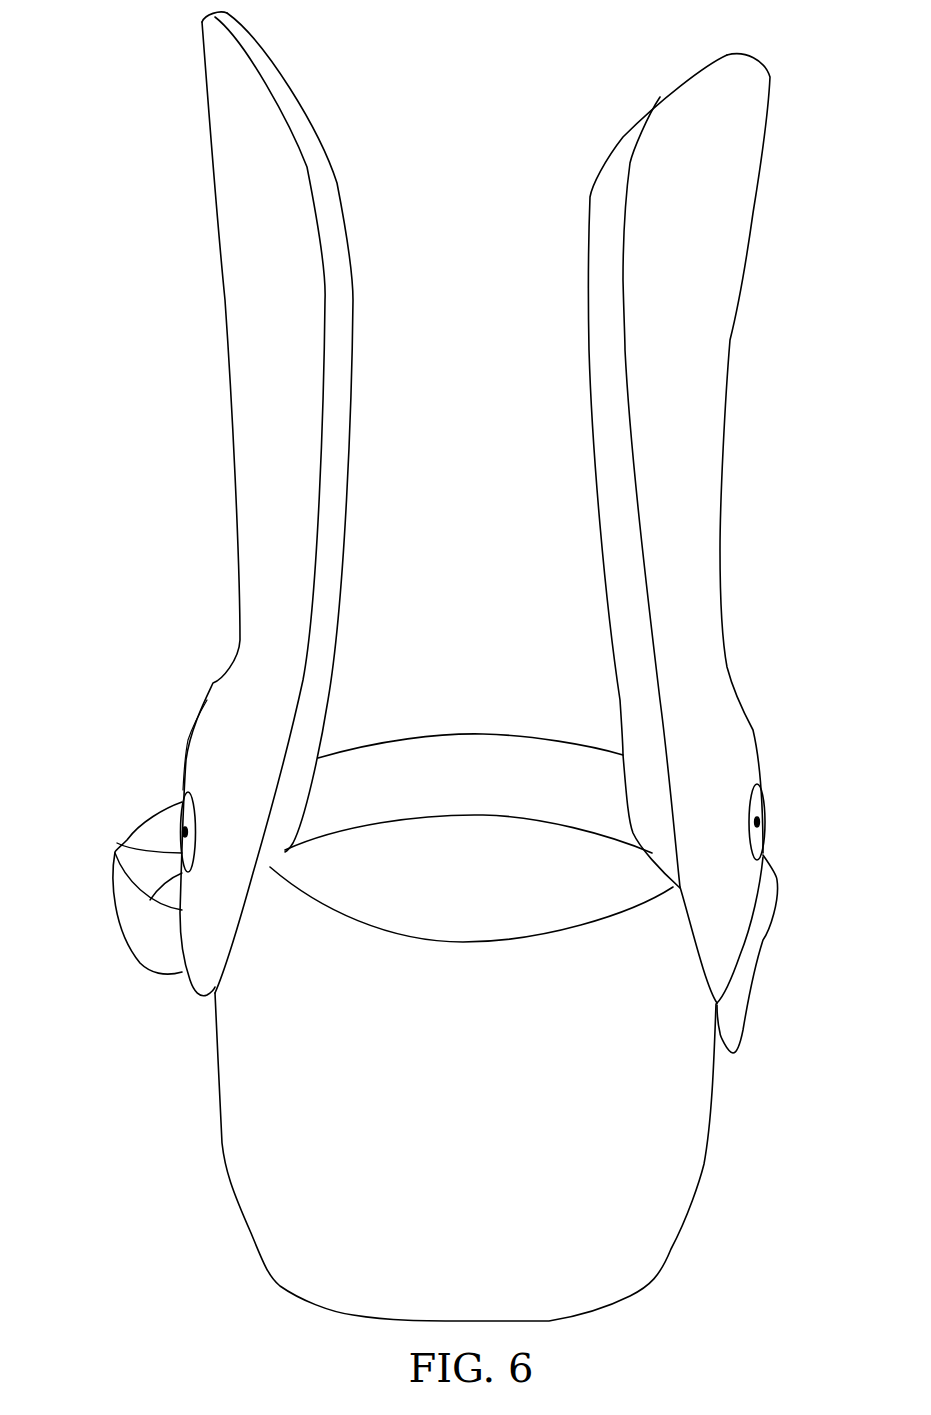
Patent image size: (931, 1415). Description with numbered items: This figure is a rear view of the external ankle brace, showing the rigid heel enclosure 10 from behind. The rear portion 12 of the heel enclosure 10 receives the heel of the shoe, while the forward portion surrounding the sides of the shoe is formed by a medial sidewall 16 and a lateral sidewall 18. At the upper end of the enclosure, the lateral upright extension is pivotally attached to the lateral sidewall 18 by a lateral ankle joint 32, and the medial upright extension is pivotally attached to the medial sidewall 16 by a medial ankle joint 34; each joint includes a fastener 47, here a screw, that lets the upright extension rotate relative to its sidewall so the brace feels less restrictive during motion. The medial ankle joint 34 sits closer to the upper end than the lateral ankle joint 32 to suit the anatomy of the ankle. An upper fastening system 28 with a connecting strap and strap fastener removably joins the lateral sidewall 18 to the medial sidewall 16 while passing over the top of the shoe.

The rigid heel enclosure 10 is at (443, 1027).
The rear portion 12 is at (583, 1166).
The medial sidewall 16 is at (683, 378).
The lateral sidewall 18 is at (297, 383).
The upper fastening system 28 is at (114, 928).
The lateral ankle joint 32 is at (217, 777).
The medial ankle joint 34 is at (707, 738).
The fastener 47 is at (178, 852).